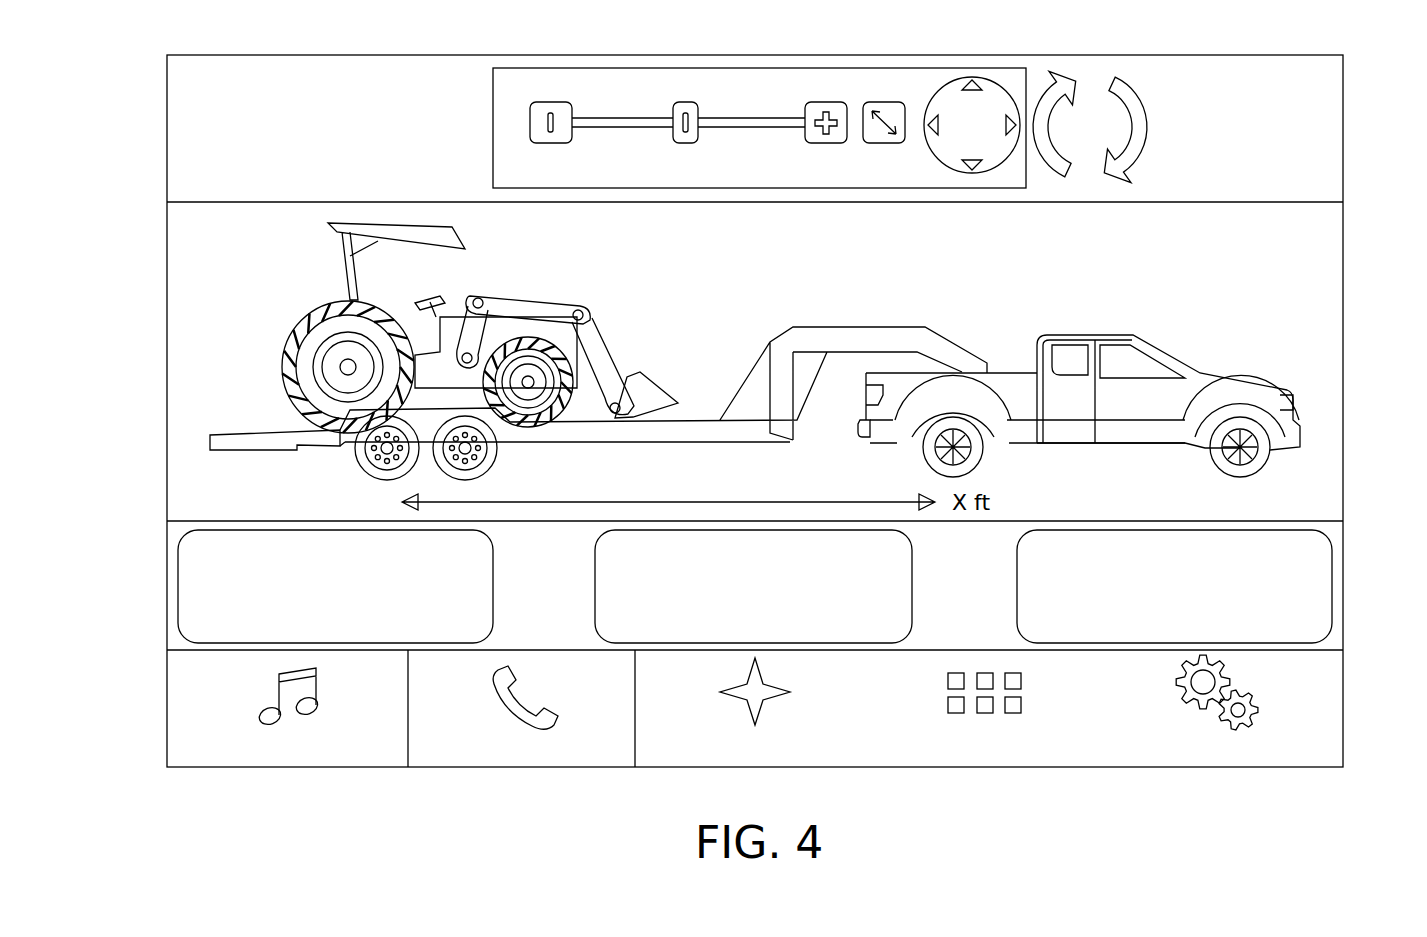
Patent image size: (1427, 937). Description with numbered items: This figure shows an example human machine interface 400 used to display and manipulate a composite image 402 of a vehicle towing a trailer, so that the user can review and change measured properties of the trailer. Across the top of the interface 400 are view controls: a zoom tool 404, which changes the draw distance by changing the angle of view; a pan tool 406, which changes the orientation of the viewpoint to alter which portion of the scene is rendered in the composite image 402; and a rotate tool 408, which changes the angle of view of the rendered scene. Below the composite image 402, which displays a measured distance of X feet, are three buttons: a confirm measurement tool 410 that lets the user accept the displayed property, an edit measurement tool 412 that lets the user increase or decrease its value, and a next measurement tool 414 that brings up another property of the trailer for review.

The human machine interface 400 is at (1345, 241).
The composite image 402 is at (212, 249).
The zoom tool 404 is at (729, 92).
The pan tool 406 is at (990, 108).
The rotate tool 408 is at (1088, 98).
The confirm measurement tool 410 is at (204, 580).
The edit measurement tool 412 is at (1308, 579).
The next measurement tool 414 is at (880, 625).